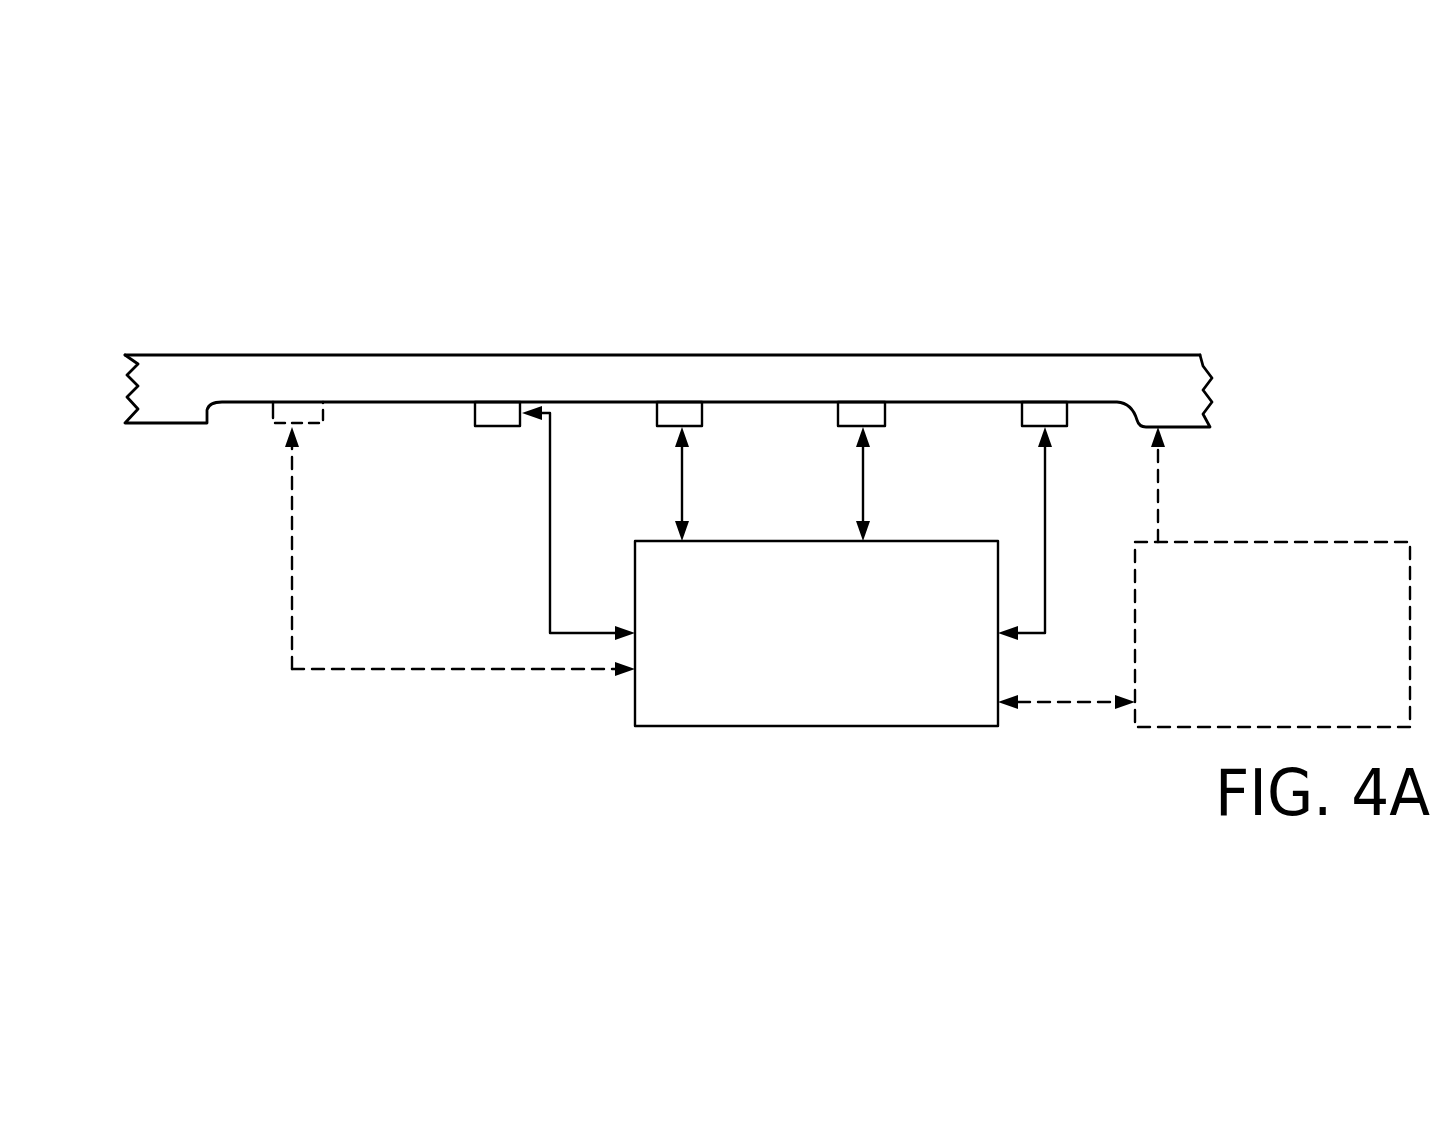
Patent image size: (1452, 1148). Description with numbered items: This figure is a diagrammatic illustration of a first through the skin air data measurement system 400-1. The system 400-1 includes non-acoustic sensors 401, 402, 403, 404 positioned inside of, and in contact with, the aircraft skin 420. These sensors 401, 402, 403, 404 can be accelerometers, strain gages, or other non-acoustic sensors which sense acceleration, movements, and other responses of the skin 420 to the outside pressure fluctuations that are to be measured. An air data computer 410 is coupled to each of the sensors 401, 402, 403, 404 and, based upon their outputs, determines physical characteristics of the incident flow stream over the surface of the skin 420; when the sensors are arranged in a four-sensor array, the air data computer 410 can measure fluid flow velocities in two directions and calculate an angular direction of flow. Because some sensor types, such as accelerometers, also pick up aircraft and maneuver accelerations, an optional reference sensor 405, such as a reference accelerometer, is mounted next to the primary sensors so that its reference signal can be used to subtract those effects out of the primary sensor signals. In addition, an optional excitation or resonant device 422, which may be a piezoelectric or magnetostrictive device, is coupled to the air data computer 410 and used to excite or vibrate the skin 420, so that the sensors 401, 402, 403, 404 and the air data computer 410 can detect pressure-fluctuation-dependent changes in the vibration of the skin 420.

The through the skin air data measurement system 400-1 is at (1072, 282).
The aircraft skin 420 is at (1203, 354).
The reference sensor 405 is at (286, 416).
The non-acoustic sensor 404 is at (500, 415).
The non-acoustic sensor 403 is at (680, 415).
The non-acoustic sensor 402 is at (873, 418).
The non-acoustic sensor 401 is at (1030, 420).
The air data computer 410 is at (635, 701).
The excitation device 422 is at (1272, 542).